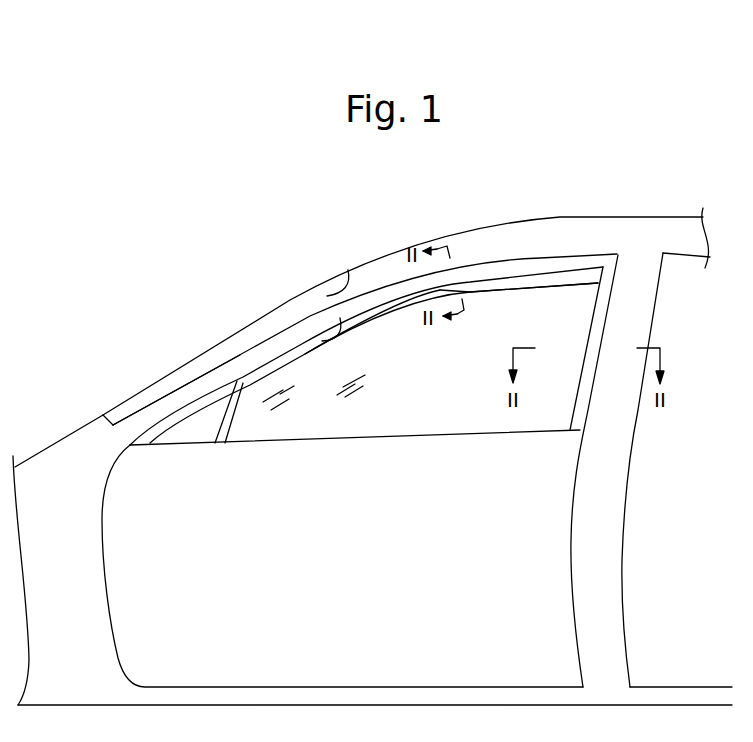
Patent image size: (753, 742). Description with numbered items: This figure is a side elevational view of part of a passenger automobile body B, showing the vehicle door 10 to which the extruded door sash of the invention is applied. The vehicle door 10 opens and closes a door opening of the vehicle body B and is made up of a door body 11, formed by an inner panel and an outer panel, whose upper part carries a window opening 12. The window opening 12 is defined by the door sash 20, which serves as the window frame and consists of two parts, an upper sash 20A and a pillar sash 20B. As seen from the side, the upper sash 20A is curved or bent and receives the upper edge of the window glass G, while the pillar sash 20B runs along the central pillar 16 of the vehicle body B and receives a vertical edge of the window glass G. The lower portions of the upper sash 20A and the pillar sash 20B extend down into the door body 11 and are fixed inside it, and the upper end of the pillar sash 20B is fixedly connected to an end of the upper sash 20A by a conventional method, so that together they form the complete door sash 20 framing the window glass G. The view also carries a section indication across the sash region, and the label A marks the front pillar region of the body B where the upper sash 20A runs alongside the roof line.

The vehicle door 10 is at (245, 355).
The door body 11 is at (552, 617).
The window opening 12 is at (323, 340).
The central pillar 16 is at (605, 515).
The door sash 20 is at (374, 363).
The upper sash 20A is at (403, 285).
The pillar sash 20B is at (598, 323).
The front pillar A is at (499, 260).
The vehicle body B is at (578, 232).
The window glass G is at (322, 423).